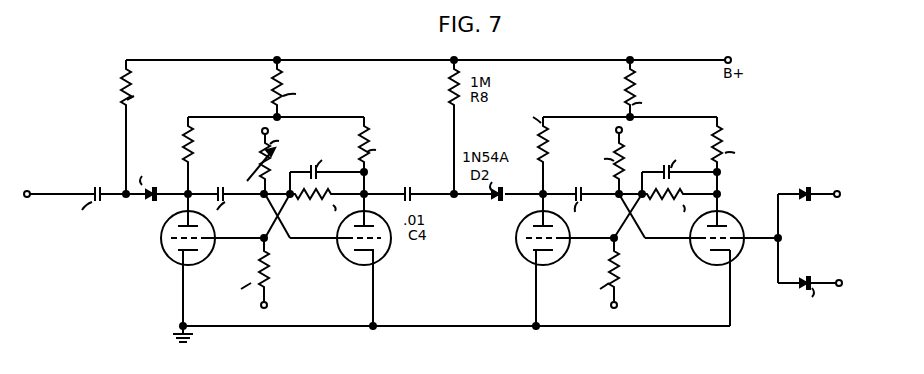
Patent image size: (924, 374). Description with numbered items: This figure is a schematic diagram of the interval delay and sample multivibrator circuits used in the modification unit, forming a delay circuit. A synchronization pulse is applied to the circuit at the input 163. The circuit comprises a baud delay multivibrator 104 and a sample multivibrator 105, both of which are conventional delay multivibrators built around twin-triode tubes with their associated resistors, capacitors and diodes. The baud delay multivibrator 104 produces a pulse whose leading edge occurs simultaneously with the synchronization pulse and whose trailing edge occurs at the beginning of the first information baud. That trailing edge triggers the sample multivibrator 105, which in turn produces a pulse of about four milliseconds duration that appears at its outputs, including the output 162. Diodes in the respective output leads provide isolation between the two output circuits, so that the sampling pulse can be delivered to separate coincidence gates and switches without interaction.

The baud delay multivibrator 104 is at (372, 52).
The sample multivibrator 105 is at (477, 52).
The output 162 is at (841, 191).
The input 163 is at (26, 193).